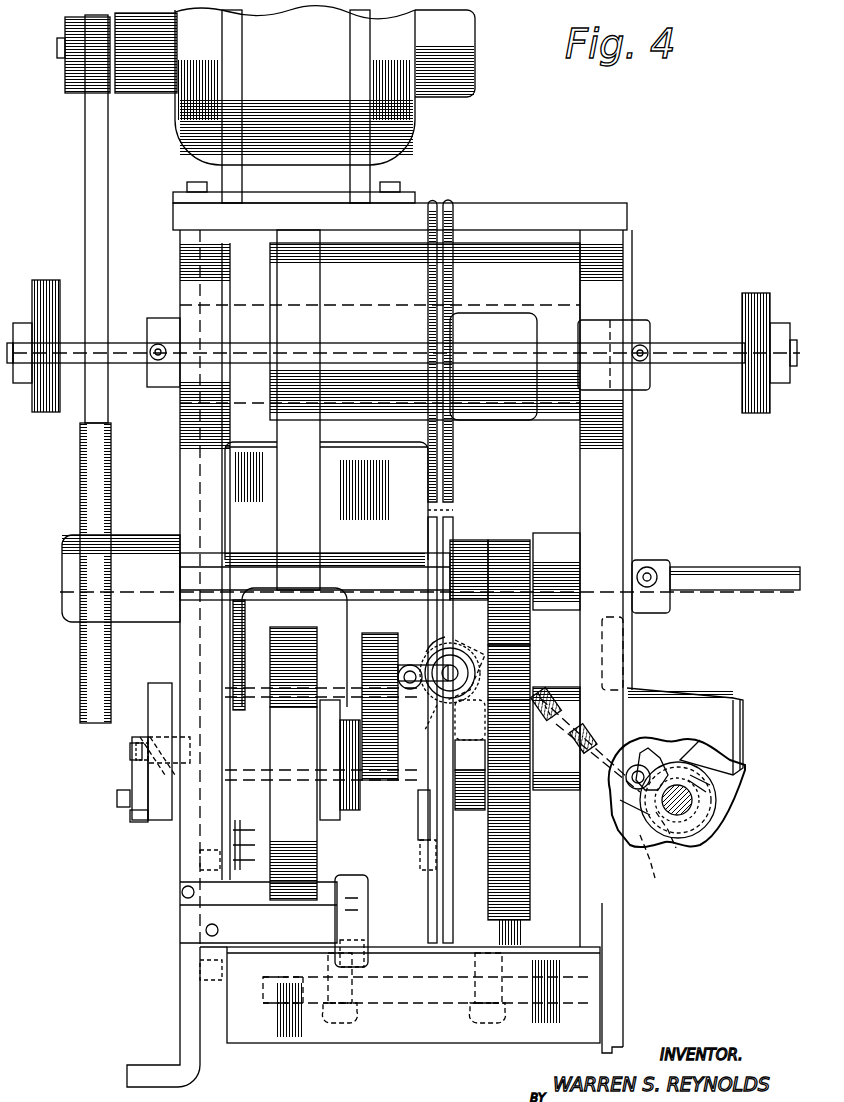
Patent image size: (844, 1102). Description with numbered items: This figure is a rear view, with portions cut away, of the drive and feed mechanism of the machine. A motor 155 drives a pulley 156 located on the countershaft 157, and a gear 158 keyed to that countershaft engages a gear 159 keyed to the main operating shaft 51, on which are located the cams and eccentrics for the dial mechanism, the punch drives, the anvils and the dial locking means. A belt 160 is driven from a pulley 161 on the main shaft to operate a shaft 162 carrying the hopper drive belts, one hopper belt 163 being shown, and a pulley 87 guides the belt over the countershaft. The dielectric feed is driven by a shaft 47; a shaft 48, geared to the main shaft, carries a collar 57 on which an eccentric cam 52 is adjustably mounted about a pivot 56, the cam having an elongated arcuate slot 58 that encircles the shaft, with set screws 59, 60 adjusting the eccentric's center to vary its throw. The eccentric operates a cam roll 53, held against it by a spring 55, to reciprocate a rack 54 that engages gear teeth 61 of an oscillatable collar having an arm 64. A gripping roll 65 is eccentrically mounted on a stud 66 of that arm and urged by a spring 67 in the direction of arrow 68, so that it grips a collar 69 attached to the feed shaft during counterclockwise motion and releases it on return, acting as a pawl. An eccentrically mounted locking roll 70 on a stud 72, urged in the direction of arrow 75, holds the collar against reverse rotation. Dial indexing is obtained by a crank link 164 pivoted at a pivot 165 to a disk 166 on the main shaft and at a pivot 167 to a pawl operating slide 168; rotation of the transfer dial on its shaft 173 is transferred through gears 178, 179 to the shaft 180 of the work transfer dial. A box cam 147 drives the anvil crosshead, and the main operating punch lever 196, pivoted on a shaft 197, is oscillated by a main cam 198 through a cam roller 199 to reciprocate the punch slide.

The shaft 47 is at (505, 670).
The shaft 48 is at (695, 810).
The main operating shaft 51 is at (580, 820).
The eccentric cam 52 is at (697, 826).
The cam roll 53 is at (639, 808).
The rack 54 is at (455, 672).
The spring 55 is at (526, 668).
The pivot 56 is at (662, 770).
The collar 57 is at (673, 836).
The elongated arcuate slot 58 is at (700, 800).
The set screw 59 is at (712, 783).
The set screw 60 is at (654, 866).
The gear teeth 61 is at (440, 660).
The arm 64 is at (440, 720).
The gripping roll 65 is at (478, 716).
The stud 66 is at (476, 772).
The spring 67 is at (540, 695).
The arrow 68 is at (470, 814).
The collar 69 is at (402, 633).
The locking roll 70 is at (402, 672).
The stud 72 is at (398, 682).
The arrow 75 is at (405, 665).
The pulley 87 is at (428, 522).
The box cam 147 is at (386, 870).
The motor 155 is at (415, 132).
The pulley 156 is at (80, 474).
The countershaft 157 is at (62, 562).
The gear 158 is at (512, 540).
The gear 159 is at (518, 898).
The belt 160 is at (440, 511).
The pulley 161 is at (424, 832).
The shaft 162 is at (696, 347).
The hopper belt 163 is at (20, 268).
The crank link 164 is at (140, 824).
The pivot 165 is at (117, 800).
The disk 166 is at (158, 690).
The pivot 167 is at (128, 752).
The pawl operating slide 168 is at (180, 761).
The transfer dial shaft 173 is at (339, 1026).
The gear 178 is at (272, 1003).
The gear 179 is at (448, 1005).
The shaft 180 is at (488, 1026).
The main operating punch lever 196 is at (305, 518).
The shaft 197 is at (633, 318).
The main cam 198 is at (290, 882).
The cam roller 199 is at (305, 612).